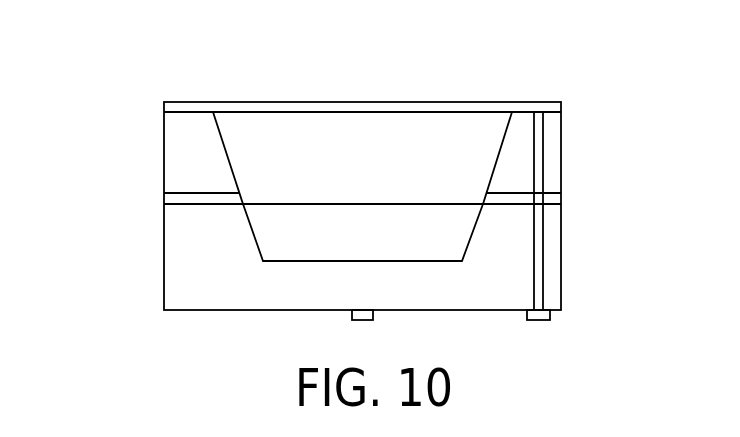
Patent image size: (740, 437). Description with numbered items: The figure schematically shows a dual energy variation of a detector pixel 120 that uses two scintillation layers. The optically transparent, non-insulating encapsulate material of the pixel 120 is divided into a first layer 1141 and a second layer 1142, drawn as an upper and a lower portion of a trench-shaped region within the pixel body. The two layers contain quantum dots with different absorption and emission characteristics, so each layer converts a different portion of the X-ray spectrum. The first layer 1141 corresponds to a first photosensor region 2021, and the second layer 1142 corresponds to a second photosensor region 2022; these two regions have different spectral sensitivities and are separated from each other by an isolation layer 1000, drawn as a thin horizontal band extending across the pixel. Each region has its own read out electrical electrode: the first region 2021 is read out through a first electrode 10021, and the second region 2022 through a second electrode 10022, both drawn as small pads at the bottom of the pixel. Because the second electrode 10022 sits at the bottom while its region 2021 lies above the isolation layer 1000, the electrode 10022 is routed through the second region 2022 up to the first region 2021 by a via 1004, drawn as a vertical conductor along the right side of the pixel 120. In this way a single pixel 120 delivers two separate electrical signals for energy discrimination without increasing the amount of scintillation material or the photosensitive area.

The detector pixel 120 is at (142, 103).
The first layer of material 1141 is at (362, 158).
The second layer of material 1142 is at (363, 232).
The isolation layer 1000 is at (164, 197).
The first photosensor region 2021 is at (562, 153).
The second photosensor region 2022 is at (563, 233).
The via 1004 is at (543, 270).
The first read out electrical electrode 10021 is at (374, 318).
The second read out electrical electrode 10022 is at (551, 318).